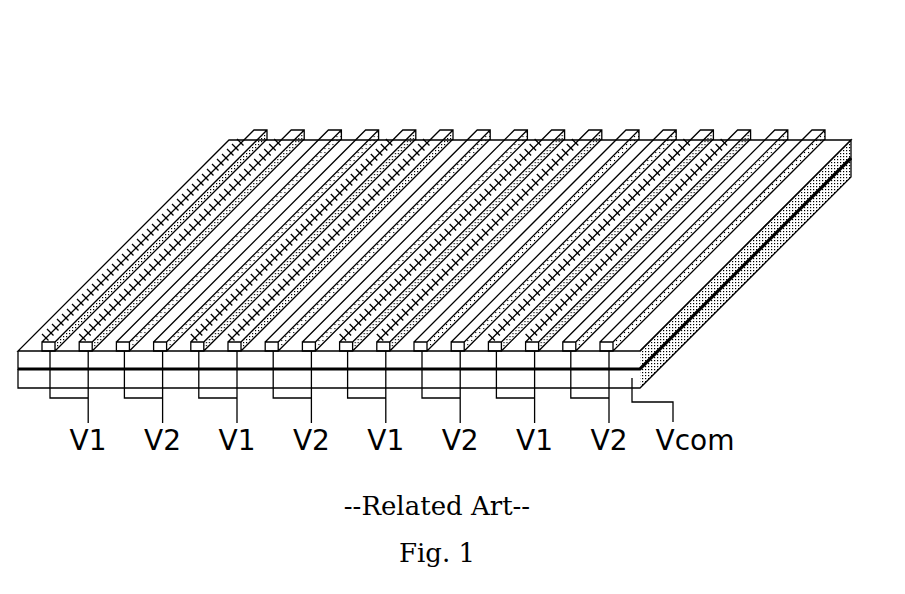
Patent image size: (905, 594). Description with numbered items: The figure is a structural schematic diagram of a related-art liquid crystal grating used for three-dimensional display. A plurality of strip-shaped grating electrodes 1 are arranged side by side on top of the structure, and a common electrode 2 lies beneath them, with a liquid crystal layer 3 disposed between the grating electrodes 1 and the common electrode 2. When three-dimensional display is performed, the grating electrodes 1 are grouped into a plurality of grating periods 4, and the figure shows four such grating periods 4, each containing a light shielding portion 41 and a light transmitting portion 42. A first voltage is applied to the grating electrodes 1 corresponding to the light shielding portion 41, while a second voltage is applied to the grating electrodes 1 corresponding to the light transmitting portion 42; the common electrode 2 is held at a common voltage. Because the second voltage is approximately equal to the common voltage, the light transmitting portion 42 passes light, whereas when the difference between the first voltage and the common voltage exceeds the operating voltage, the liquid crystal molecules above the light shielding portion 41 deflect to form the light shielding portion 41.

The grating electrode 1 is at (434, 213).
The common electrode 2 is at (653, 372).
The liquid crystal layer 3 is at (700, 311).
The grating period 4 is at (433, 186).
The light shielding portion 41 is at (396, 211).
The light transmitting portion 42 is at (780, 278).